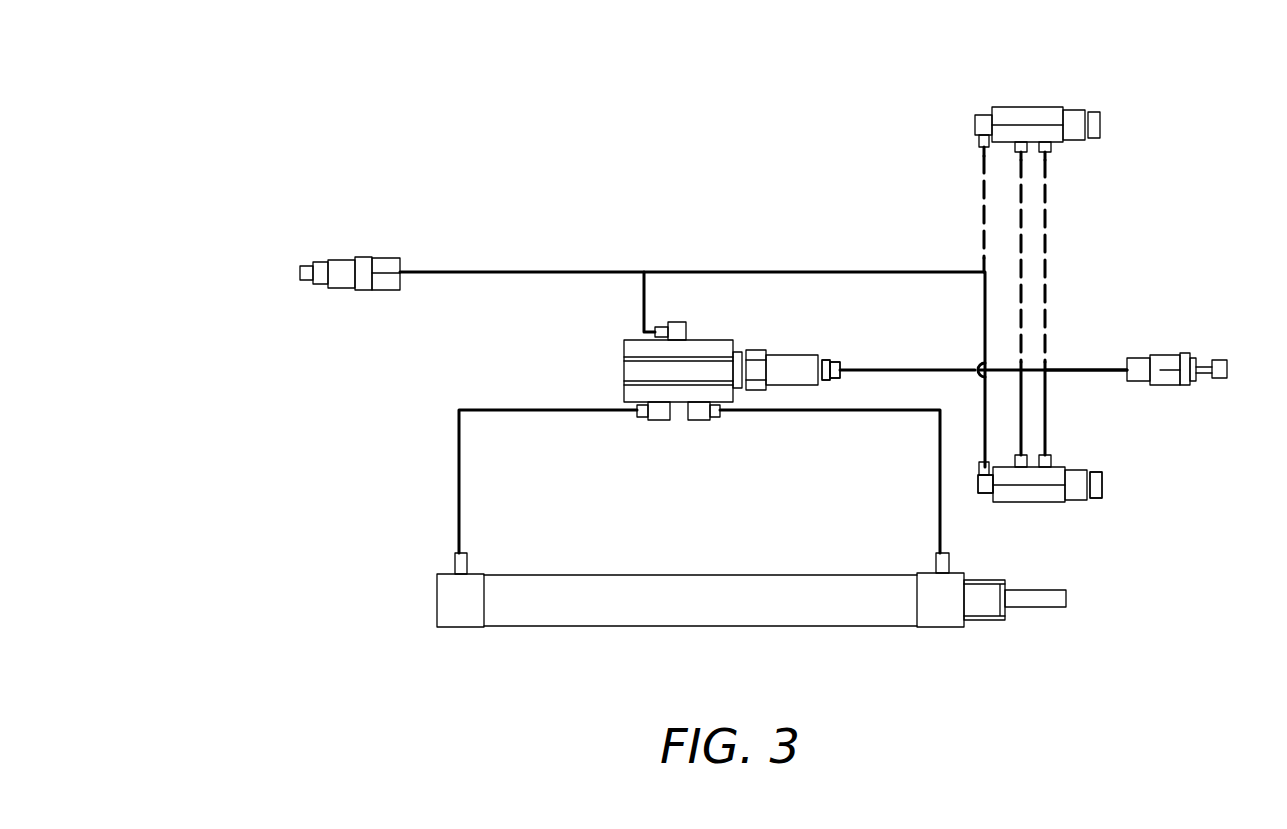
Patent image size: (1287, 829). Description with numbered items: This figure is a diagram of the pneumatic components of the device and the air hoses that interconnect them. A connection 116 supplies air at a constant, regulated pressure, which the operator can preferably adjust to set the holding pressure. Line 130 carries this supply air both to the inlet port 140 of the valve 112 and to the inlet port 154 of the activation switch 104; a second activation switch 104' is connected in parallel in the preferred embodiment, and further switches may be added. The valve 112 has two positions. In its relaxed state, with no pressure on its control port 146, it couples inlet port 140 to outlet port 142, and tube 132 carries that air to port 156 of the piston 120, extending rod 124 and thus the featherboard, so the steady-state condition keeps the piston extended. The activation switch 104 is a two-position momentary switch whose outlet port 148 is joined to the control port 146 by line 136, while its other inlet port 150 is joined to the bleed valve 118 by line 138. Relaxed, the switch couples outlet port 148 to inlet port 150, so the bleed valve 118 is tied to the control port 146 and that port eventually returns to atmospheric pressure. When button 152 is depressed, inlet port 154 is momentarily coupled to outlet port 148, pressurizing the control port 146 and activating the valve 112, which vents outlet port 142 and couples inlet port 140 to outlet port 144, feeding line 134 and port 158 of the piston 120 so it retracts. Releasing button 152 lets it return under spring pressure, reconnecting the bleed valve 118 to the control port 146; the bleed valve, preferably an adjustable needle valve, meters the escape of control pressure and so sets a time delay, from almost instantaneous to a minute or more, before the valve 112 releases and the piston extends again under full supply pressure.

The activation switch 104 is at (1068, 505).
The second activation switch 104' is at (1051, 246).
The valve 112 is at (622, 363).
The connection 116 is at (340, 256).
The bleed valve 118 is at (1160, 355).
The piston 120 is at (578, 627).
The rod 124 is at (1030, 608).
The line 130 is at (522, 268).
The tube 132 is at (497, 415).
The line 134 is at (897, 415).
The line 136 is at (866, 368).
The line 138 is at (1072, 365).
The inlet port 140 is at (697, 325).
The outlet port 142 is at (652, 422).
The outlet port 144 is at (698, 422).
The control port 146 is at (843, 362).
The outlet port 148 is at (1028, 452).
The inlet port 150 is at (1050, 458).
The button 152 is at (1105, 485).
The inlet port 154 is at (982, 497).
The port 156 is at (470, 553).
The port 158 is at (932, 555).